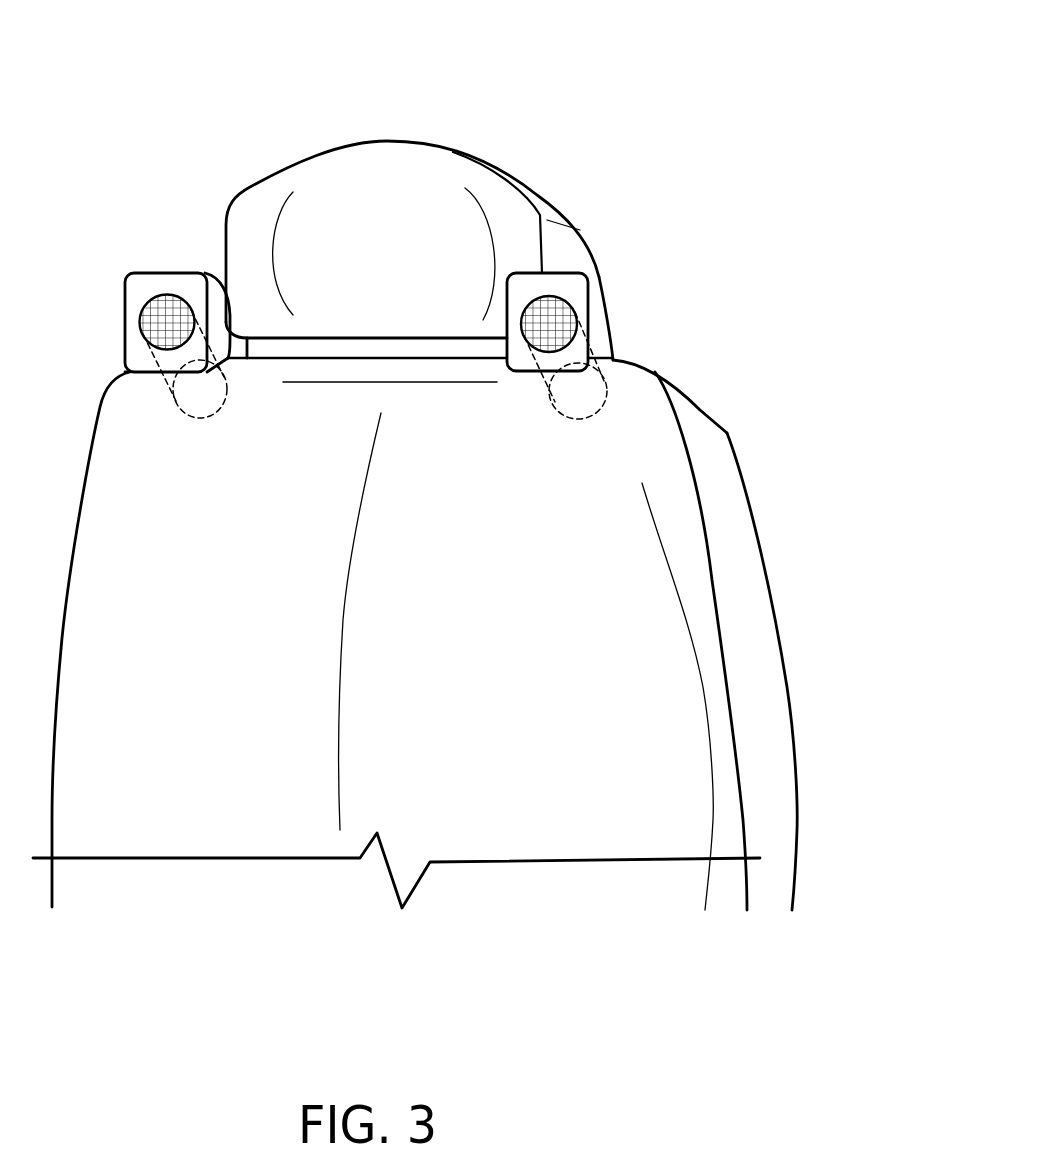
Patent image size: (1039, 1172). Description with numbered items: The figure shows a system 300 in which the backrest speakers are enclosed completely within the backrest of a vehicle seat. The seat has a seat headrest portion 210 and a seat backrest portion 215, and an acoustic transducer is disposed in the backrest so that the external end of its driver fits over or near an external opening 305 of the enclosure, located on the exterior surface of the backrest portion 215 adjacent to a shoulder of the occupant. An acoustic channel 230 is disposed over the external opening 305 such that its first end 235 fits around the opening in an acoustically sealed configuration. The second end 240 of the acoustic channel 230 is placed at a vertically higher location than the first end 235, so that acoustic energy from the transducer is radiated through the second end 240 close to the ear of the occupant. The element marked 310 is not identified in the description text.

The system 300 is at (84, 74).
The seat headrest portion 210 is at (440, 290).
The seat backrest portion 215 is at (750, 567).
The acoustic channel 230 is at (596, 352).
The first end 235 is at (613, 360).
The second end 240 is at (593, 273).
The external opening 305 is at (604, 397).
The speaker grille 310 is at (170, 317).